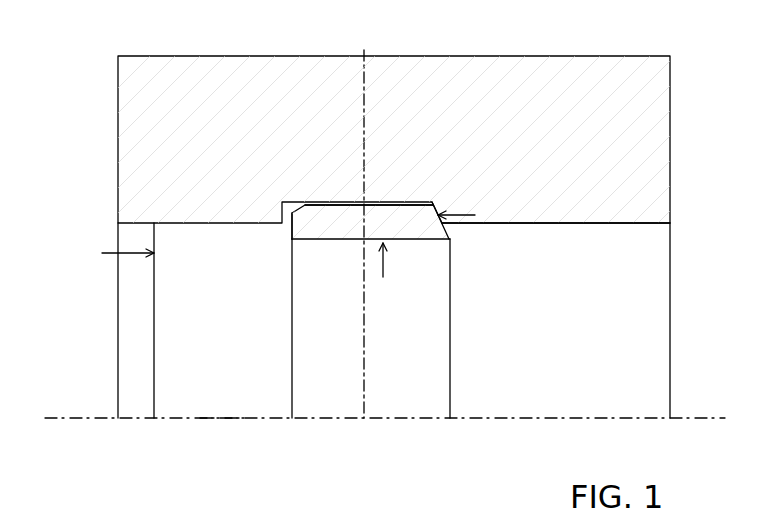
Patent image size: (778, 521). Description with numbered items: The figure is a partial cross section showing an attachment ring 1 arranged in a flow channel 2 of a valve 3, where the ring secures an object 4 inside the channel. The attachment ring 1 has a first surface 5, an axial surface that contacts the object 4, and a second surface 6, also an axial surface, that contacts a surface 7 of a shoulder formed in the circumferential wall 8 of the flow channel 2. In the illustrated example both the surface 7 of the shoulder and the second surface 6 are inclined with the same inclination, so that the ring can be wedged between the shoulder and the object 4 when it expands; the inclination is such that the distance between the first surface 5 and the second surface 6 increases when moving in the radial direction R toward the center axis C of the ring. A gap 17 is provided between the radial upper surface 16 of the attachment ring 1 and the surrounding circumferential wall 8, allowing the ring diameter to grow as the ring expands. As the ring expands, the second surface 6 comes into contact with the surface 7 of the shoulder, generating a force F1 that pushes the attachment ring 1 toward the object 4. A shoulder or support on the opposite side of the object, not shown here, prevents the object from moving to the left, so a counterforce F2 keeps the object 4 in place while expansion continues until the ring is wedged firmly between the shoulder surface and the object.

The attachment ring 1 is at (477, 342).
The flow channel 2 is at (670, 276).
The valve 3 is at (670, 82).
The object 4 is at (222, 418).
The first surface 5 is at (292, 228).
The second surface 6 is at (434, 239).
The surface of the shoulder 7 is at (436, 207).
The circumferential wall 8 is at (533, 223).
The upper surface 16 is at (317, 205).
The gap 17 is at (317, 205).
The radial direction R is at (364, 50).
The center axis C is at (418, 418).
The force F1 is at (450, 222).
The counterforce F2 is at (102, 253).